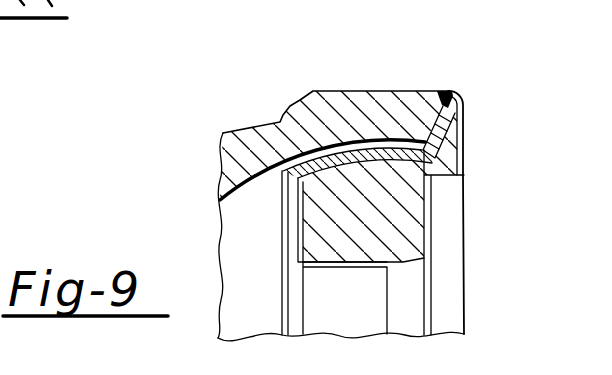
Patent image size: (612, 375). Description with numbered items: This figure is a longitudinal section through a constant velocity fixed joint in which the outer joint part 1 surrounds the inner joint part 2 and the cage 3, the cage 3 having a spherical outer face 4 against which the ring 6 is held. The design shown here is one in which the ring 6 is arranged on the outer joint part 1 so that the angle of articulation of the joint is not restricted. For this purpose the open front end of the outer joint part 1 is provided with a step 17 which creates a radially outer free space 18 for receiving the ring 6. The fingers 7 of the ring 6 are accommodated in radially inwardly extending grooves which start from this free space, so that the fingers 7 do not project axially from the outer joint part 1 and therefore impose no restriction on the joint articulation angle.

The outer joint part 1 is at (346, 117).
The inner joint part 2 is at (318, 200).
The cage 3 is at (323, 165).
The spherical outer face 4 is at (467, 143).
The ring 6 is at (452, 126).
The fingers 7 is at (465, 132).
The step 17 is at (466, 126).
The radially outer free space 18 is at (428, 147).